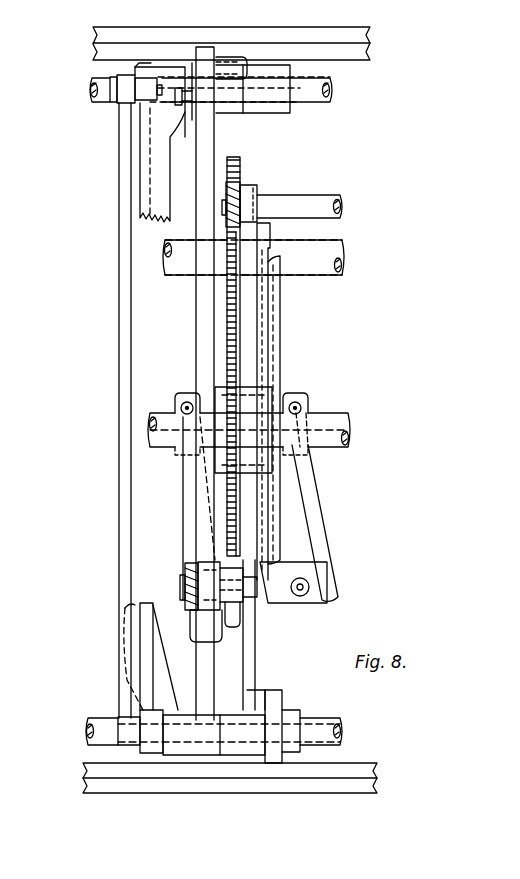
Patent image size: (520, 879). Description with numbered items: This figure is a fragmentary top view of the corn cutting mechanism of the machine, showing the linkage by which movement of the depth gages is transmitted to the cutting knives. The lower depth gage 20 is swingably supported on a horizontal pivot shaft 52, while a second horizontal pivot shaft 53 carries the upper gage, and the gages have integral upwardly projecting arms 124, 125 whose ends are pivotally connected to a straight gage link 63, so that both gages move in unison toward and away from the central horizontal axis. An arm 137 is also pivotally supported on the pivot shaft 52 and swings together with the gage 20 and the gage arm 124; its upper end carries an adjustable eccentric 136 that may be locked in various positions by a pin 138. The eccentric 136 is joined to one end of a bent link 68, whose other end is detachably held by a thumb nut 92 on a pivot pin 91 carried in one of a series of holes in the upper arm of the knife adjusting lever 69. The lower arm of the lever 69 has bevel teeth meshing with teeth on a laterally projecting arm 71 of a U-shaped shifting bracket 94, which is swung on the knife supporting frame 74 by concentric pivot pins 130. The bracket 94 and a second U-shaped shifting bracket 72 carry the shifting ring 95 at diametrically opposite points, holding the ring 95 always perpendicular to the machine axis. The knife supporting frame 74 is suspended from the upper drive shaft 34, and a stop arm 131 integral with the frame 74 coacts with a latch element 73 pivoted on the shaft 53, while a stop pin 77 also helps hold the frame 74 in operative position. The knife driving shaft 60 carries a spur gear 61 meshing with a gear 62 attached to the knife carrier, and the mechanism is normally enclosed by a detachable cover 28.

The detachable cover 28 is at (352, 50).
The horizontal pivot shaft 52 is at (320, 97).
The upwardly projecting arm 124 is at (130, 73).
The pin 138 is at (177, 97).
The bent link 68 is at (207, 340).
The eccentric 136 is at (242, 68).
The arm 137 is at (228, 88).
The depth gage 20 is at (140, 210).
The gage link 63 is at (119, 498).
The spur gear 61 is at (240, 165).
The gear 62 is at (230, 370).
The stop pin 77 is at (327, 212).
The knife driving shaft 60 is at (327, 267).
The knife supporting frame 74 is at (247, 313).
The shifting ring 95 is at (273, 352).
The upper drive shaft 34 is at (333, 423).
The second U-shaped shifting bracket 72 is at (190, 512).
The U-shaped shifting bracket 94 is at (315, 505).
The thumb nut 92 is at (190, 574).
The knife adjusting lever 69 is at (207, 608).
The pivot pin 91 is at (256, 588).
The laterally projecting arm 71 is at (303, 603).
The pivot pin 130 is at (309, 587).
The stop arm 131 is at (255, 648).
The latch element 73 is at (270, 677).
The horizontal pivot shaft 53 is at (330, 728).
The upwardly projecting arm 125 is at (152, 738).